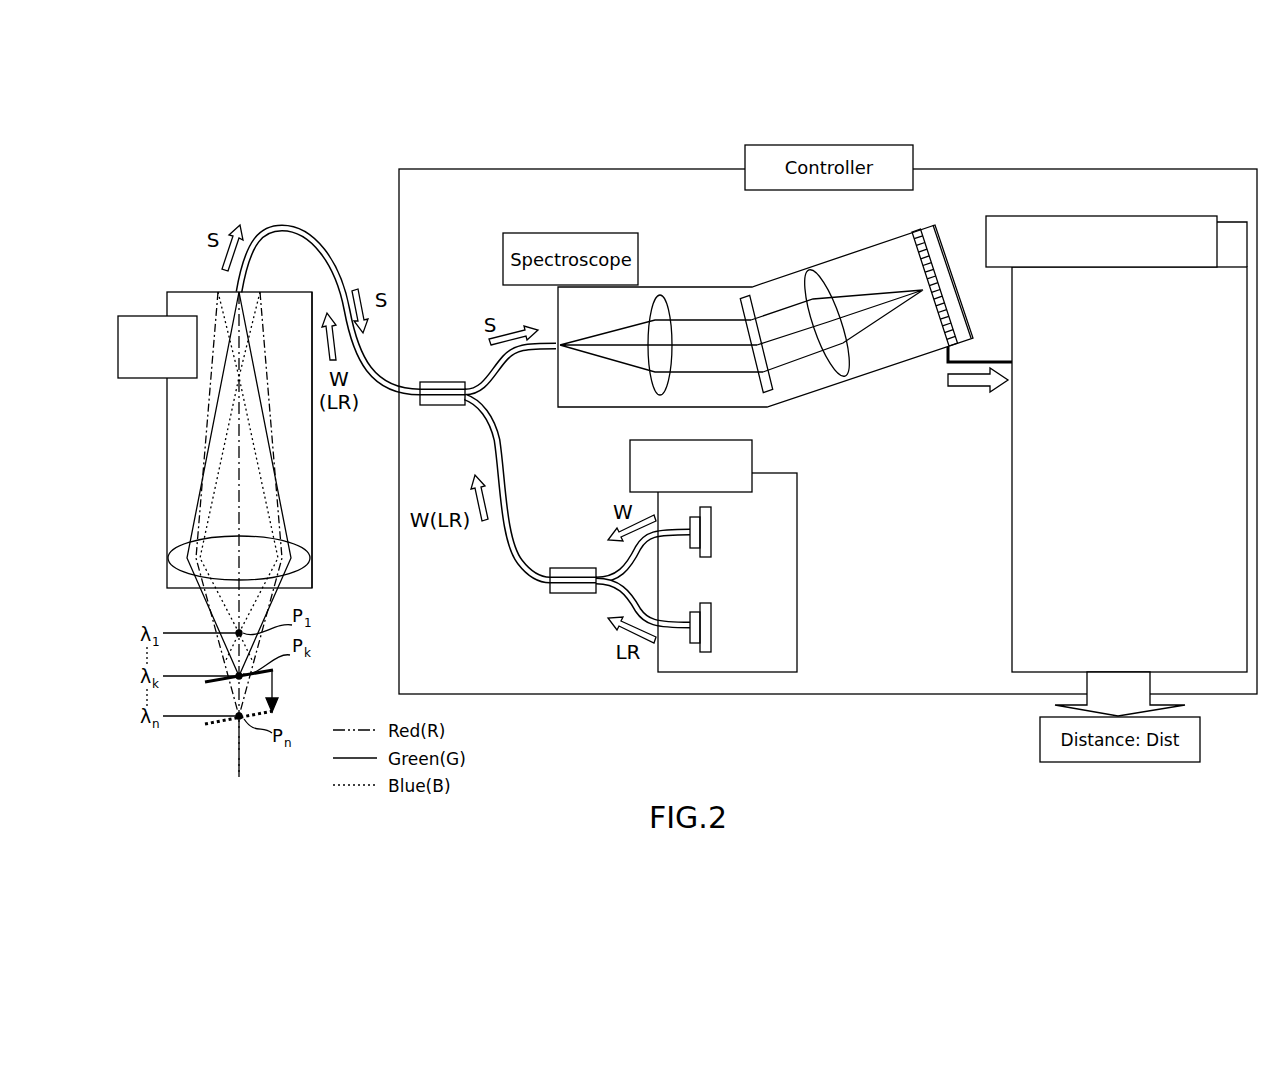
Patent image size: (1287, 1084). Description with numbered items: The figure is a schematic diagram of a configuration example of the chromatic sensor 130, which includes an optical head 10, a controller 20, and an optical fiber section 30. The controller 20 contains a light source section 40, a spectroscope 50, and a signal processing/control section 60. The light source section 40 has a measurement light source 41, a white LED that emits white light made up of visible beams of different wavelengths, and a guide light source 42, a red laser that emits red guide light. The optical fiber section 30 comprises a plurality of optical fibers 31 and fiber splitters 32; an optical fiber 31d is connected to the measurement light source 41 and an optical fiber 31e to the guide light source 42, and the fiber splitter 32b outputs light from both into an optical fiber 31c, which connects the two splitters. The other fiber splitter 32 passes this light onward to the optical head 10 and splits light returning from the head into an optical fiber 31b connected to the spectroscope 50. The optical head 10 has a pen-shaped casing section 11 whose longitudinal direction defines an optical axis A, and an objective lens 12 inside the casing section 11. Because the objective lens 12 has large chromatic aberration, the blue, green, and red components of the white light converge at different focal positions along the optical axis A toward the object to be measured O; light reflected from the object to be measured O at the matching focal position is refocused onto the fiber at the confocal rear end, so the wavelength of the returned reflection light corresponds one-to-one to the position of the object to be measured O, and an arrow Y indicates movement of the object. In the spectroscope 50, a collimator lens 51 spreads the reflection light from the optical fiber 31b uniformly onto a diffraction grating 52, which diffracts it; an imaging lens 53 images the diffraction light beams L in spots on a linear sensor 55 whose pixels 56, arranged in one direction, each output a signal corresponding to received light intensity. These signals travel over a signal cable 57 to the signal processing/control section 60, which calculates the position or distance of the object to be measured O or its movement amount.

The optical head 10 is at (245, 501).
The casing section 11 is at (312, 453).
The objective lens 12 is at (310, 550).
The controller 20 is at (700, 163).
The chromatic sensor 130 is at (635, 148).
The optical fiber section 30 is at (283, 227).
The optical fiber 31 is at (307, 228).
The optical fiber 31b is at (512, 363).
The optical fiber 31c is at (515, 557).
The optical fiber 31d is at (628, 558).
The optical fiber 31e is at (628, 607).
The fiber splitter 32 is at (440, 382).
The fiber splitter 32b is at (555, 568).
The light source section 40 is at (745, 579).
The measurement light source 41 is at (710, 548).
The guide light source 42 is at (707, 655).
The spectroscope 50 is at (773, 323).
The collimator lens 51 is at (663, 292).
The diffraction grating 52 is at (745, 297).
The imaging lens 53 is at (846, 378).
The linear sensor 55 is at (933, 282).
The pixel 56 is at (950, 285).
The signal cable 57 is at (1000, 358).
The signal processing/control section 60 is at (1012, 555).
The object to be measured O is at (275, 670).
The arrow indicating movement Y is at (276, 698).
The optical axis A is at (244, 770).
The diffraction light beam L is at (866, 290).